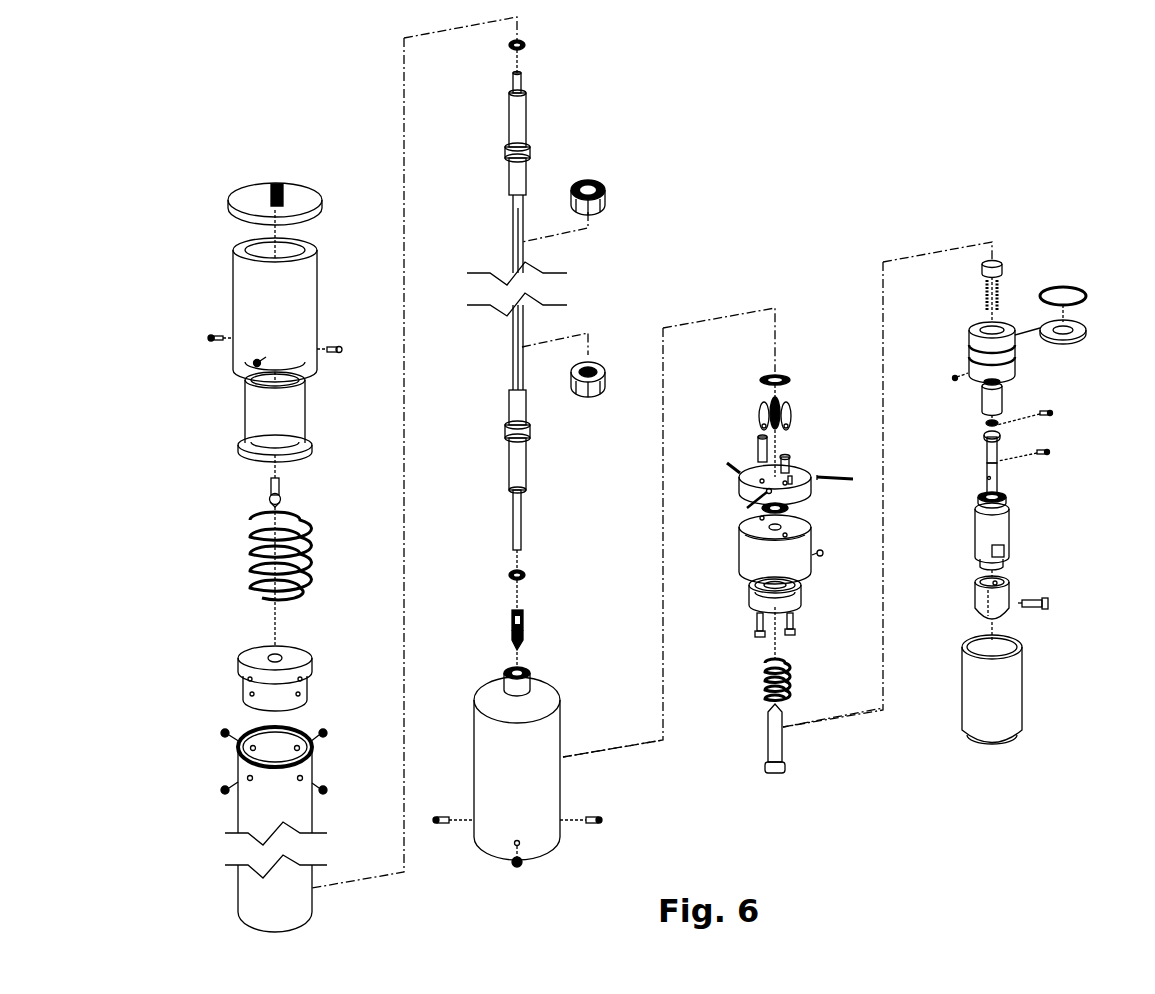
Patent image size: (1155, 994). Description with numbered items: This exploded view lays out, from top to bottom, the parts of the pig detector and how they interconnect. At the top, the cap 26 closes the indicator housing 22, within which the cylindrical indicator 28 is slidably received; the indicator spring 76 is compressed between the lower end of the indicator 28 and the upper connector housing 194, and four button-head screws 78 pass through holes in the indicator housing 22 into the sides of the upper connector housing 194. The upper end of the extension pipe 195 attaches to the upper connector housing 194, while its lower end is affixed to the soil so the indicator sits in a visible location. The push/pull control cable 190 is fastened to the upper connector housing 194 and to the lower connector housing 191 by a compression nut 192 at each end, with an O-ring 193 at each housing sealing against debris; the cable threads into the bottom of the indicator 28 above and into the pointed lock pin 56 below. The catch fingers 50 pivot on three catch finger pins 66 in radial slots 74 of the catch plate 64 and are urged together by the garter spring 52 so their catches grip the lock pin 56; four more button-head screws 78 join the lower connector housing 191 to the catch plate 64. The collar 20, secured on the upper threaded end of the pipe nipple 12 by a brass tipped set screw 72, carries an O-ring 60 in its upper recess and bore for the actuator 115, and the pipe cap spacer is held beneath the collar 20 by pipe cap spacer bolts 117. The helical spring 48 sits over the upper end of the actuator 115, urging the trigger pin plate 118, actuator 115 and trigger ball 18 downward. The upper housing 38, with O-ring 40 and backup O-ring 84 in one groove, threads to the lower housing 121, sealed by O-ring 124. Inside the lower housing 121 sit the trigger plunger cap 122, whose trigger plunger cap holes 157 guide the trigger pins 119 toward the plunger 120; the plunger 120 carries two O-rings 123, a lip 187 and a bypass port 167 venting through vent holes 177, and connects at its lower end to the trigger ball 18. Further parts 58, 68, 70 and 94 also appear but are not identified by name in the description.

The pipe nipple 12 is at (1024, 674).
The trigger ball 18 is at (1010, 585).
The collar 20 is at (740, 543).
The indicator housing 22 is at (233, 283).
The cap 26 is at (245, 195).
The indicator 28 is at (245, 417).
The upper housing 38 is at (968, 337).
The O-ring 40 is at (1087, 334).
The helical spring 48 is at (765, 673).
The catch fingers 50 is at (780, 395).
The garter spring 52 is at (762, 375).
The pointed lock pin 56 is at (527, 615).
The pin 58 is at (265, 491).
The O-ring 60 is at (790, 505).
The catch plate 64 is at (740, 473).
The catch finger pins 66 is at (725, 462).
The screw 68 is at (747, 506).
The post 70 is at (758, 443).
The brass tipped set screw 72 is at (821, 550).
The radial slots 74 is at (793, 474).
The indicator spring 76 is at (250, 540).
The button-head screws 78 is at (210, 334).
The backup O-ring 84 is at (1087, 290).
The set screw 94 is at (1048, 600).
The actuator 115 is at (768, 738).
The pipe cap spacer bolts 117 is at (757, 623).
The trigger pin plate 118 is at (750, 587).
The trigger pins 119 is at (985, 292).
The plunger 120 is at (1000, 443).
The lower housing 121 is at (1010, 532).
The trigger plunger cap 122 is at (1002, 400).
The O-rings 123 is at (1052, 412).
The O-ring 124 is at (1010, 497).
The trigger plunger cap holes 157 is at (1010, 378).
The bypass port 167 is at (988, 421).
The vent holes 177 is at (988, 475).
The lip 187 is at (985, 434).
The push/pull control cable 190 is at (530, 122).
The lower connector housing 191 is at (545, 700).
The compression nut 192 is at (603, 193).
The O-ring 193 is at (530, 40).
The upper connector housing 194 is at (313, 660).
The extension pipe 195 is at (312, 813).